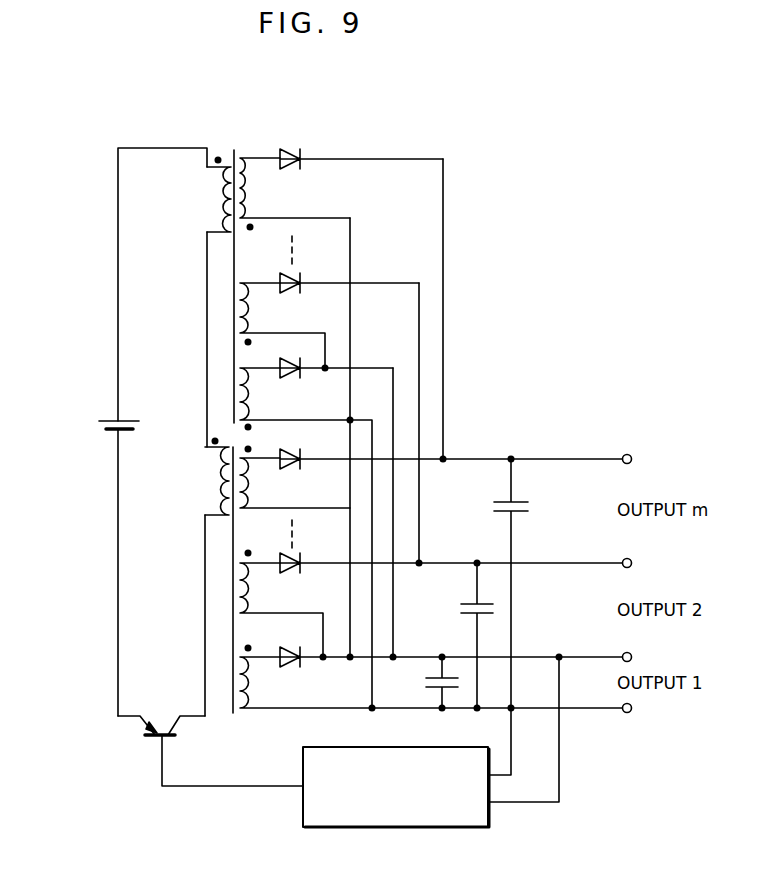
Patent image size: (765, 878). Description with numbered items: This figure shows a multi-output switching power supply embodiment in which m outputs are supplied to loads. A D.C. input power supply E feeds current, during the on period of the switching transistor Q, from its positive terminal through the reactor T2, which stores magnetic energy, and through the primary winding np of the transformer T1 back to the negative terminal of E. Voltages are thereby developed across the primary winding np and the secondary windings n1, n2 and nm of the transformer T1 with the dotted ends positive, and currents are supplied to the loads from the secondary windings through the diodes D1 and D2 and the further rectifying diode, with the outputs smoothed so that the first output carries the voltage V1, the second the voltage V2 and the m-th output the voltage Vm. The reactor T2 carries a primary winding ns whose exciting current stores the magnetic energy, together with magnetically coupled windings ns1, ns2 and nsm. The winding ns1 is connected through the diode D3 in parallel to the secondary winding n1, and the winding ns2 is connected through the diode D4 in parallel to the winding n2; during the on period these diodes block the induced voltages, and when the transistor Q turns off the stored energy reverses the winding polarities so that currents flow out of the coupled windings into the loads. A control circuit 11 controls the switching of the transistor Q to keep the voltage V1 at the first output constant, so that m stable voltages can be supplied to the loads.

The control circuit 11 is at (430, 828).
The D.C. input power supply E is at (99, 422).
The transistor Q is at (160, 722).
The transformer T1 is at (233, 716).
The reactor T2 is at (234, 150).
The primary winding np is at (208, 491).
The primary winding ns is at (208, 199).
The winding nsm is at (256, 197).
The winding ns2 is at (256, 318).
The winding ns1 is at (256, 405).
The secondary winding nm is at (256, 492).
The secondary winding n2 is at (254, 597).
The secondary winding n1 is at (254, 690).
The diode D4 is at (296, 292).
The diode D3 is at (296, 377).
The diode D2 is at (296, 572).
The diode D1 is at (296, 666).
The voltage Vm is at (490, 617).
The voltage V2 is at (459, 635).
The voltage V1 is at (424, 682).